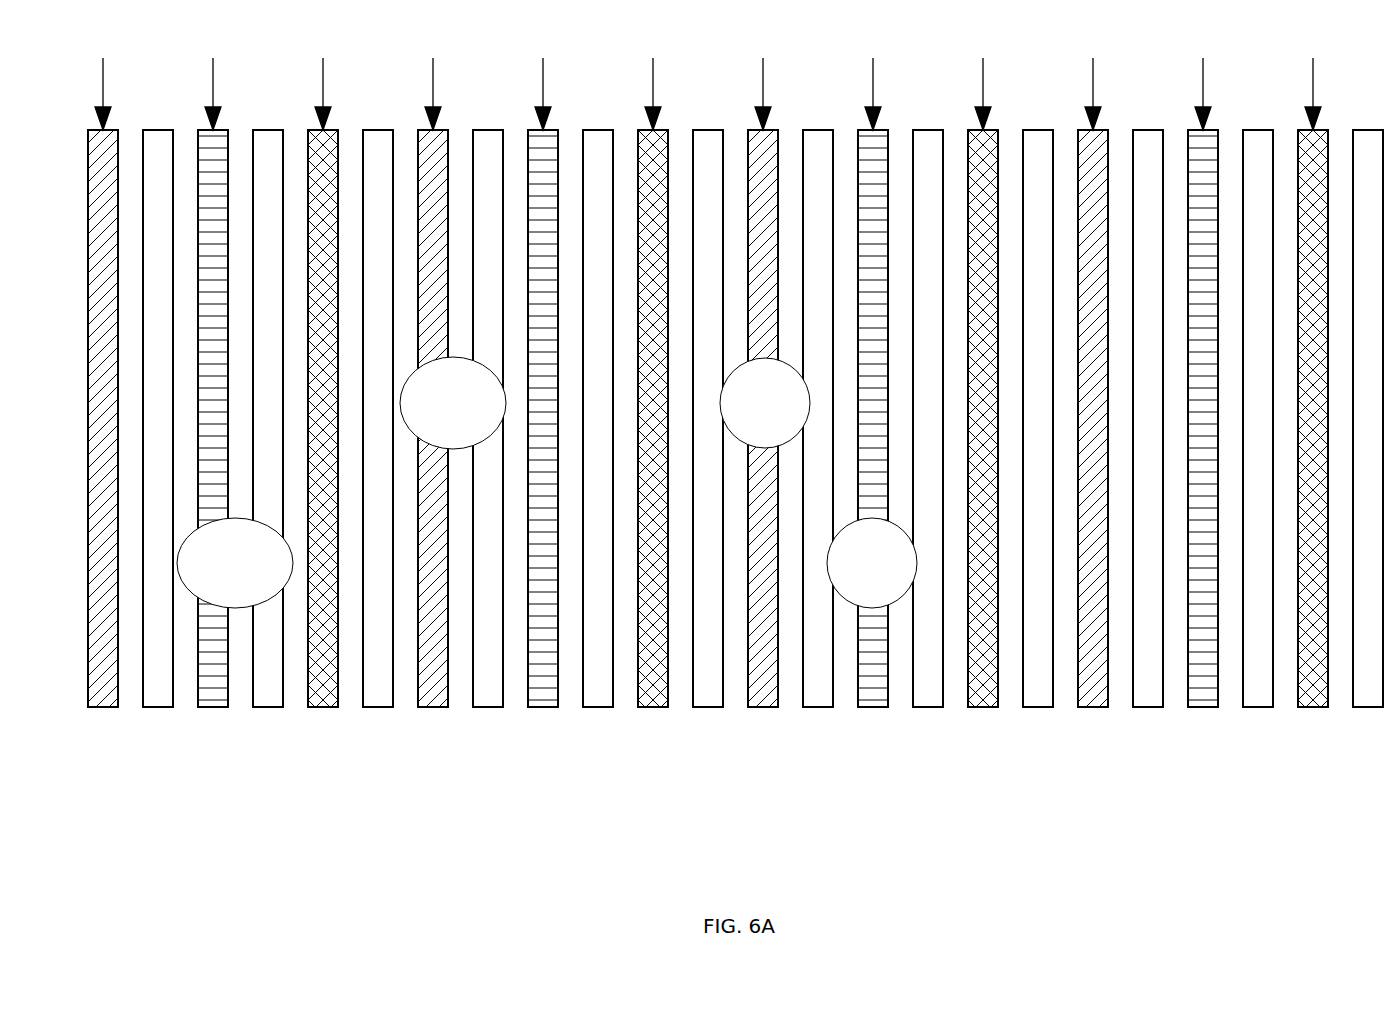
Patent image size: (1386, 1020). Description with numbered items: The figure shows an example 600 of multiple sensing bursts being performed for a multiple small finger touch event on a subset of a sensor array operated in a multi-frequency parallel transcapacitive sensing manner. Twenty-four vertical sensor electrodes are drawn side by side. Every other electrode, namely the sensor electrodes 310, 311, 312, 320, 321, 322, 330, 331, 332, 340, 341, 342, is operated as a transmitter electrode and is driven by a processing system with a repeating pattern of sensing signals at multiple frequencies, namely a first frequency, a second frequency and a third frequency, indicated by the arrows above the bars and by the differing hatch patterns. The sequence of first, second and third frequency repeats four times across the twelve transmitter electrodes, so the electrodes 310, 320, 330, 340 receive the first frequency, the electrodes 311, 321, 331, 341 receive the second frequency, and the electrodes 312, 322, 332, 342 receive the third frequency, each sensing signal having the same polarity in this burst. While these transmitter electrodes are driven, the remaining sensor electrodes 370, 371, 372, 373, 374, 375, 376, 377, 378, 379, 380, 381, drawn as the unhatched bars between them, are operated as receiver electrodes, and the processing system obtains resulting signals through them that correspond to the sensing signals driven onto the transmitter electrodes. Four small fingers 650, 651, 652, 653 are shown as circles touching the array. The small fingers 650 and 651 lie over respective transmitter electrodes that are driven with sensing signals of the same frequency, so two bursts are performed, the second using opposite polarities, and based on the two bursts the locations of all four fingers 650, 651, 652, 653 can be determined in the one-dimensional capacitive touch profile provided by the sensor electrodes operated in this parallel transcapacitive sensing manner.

The example of multiple sensing bursts 600 is at (736, 469).
The sensor electrode 310 is at (103, 708).
The sensor electrode 311 is at (213, 708).
The sensor electrode 312 is at (323, 708).
The sensor electrode 320 is at (433, 708).
The sensor electrode 321 is at (543, 708).
The sensor electrode 322 is at (653, 708).
The sensor electrode 330 is at (763, 708).
The sensor electrode 331 is at (873, 708).
The sensor electrode 332 is at (983, 708).
The sensor electrode 340 is at (1093, 708).
The sensor electrode 341 is at (1203, 708).
The sensor electrode 342 is at (1313, 708).
The sensor electrode 370 is at (158, 708).
The sensor electrode 371 is at (268, 708).
The sensor electrode 372 is at (378, 708).
The sensor electrode 373 is at (488, 708).
The sensor electrode 374 is at (598, 708).
The sensor electrode 375 is at (708, 708).
The sensor electrode 376 is at (818, 708).
The sensor electrode 377 is at (928, 708).
The sensor electrode 378 is at (1038, 708).
The sensor electrode 379 is at (1148, 708).
The sensor electrode 380 is at (1258, 708).
The sensor electrode 381 is at (1368, 708).
The small finger 650 is at (453, 403).
The small finger 651 is at (765, 403).
The small finger 652 is at (235, 563).
The small finger 653 is at (872, 563).